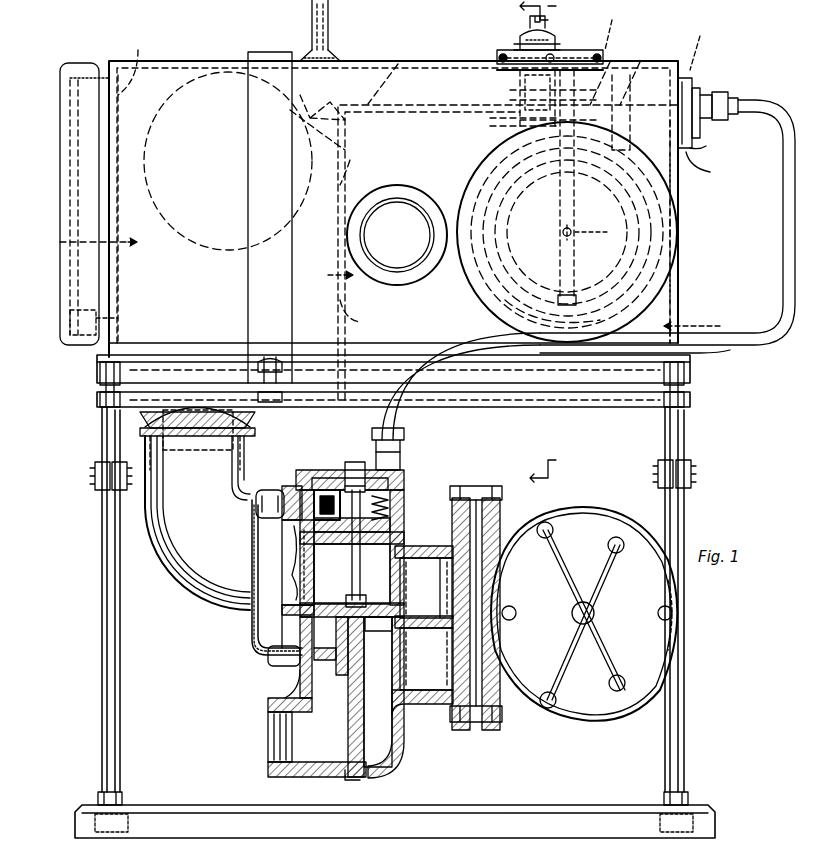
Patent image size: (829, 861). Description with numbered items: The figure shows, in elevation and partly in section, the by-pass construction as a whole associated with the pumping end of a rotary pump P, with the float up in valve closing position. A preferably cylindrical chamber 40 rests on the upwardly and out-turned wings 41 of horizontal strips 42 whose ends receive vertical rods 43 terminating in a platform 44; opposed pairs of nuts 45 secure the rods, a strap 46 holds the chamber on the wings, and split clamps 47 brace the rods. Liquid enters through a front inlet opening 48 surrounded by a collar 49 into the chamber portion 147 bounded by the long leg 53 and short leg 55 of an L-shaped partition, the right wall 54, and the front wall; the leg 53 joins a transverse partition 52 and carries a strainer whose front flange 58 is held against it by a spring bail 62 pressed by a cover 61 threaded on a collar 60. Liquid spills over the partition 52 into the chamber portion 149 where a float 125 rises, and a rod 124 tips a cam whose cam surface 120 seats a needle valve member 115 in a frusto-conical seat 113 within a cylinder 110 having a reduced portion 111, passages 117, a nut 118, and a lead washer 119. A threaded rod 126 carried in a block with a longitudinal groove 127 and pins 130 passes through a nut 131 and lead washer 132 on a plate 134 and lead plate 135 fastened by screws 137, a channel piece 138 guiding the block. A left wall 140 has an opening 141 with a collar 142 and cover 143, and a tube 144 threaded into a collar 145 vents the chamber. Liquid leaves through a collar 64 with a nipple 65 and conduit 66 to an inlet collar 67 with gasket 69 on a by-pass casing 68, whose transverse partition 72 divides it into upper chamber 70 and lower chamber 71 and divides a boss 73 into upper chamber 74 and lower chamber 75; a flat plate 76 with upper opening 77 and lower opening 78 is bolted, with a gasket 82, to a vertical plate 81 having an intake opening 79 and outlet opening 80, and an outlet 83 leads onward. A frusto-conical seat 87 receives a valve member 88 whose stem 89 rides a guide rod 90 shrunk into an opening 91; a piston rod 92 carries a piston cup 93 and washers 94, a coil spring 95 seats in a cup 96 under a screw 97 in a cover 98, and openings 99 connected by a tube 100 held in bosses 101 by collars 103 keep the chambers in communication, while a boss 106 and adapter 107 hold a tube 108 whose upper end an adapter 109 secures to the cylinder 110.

The chamber 40 is at (178, 70).
The wings 41 is at (152, 358).
The horizontal strips 42 is at (100, 392).
The vertical rods 43 is at (102, 660).
The platform 44 is at (382, 835).
The nuts 45 is at (100, 372).
The strap 46 is at (258, 52).
The split clamp 47 is at (100, 480).
The front inlet opening 48 is at (400, 248).
The collar 49 is at (428, 260).
The transverse partition 52 is at (350, 140).
The long leg 53 is at (366, 66).
The right wall 54 is at (680, 304).
The short leg 55 is at (352, 168).
The front flange 58 is at (680, 238).
The collar 60 is at (660, 274).
The cover 61 is at (664, 212).
The spring bail 62 is at (576, 232).
The collar 64 is at (244, 436).
The nipple 65 is at (150, 432).
The conduit 66 is at (178, 536).
The inlet collar 67 is at (298, 592).
The by-pass casing 68 is at (300, 678).
The gasket 69 is at (322, 644).
The upper chamber 70 is at (352, 574).
The lower chamber 71 is at (378, 692).
The transverse partition 72 is at (402, 624).
The boss 73 is at (414, 546).
The upper chamber 74 is at (426, 588).
The lower chamber 75 is at (426, 659).
The flat plate 76 is at (458, 498).
The upper opening 77 is at (448, 556).
The lower opening 78 is at (446, 692).
The intake opening 79 is at (520, 540).
The outlet opening 80 is at (528, 708).
The vertical plate 81 is at (492, 498).
The gasket 82 is at (476, 486).
The outlet 83 is at (270, 744).
The frusto-conical seat 87 is at (378, 618).
The valve member 88 is at (366, 612).
The stem 89 is at (340, 672).
The guide rod 90 is at (350, 718).
The opening 91 is at (374, 786).
The piston rod 92 is at (352, 572).
The piston cup 93 is at (402, 520).
The washers 94 is at (336, 532).
The coil spring 95 is at (368, 494).
The cup 96 is at (328, 470).
The screw 97 is at (354, 462).
The cover 98 is at (302, 470).
The openings 99 is at (327, 570).
The tube 100 is at (250, 600).
The bosses 101 is at (296, 486).
The collar 103 is at (262, 490).
The boss 106 is at (404, 458).
The adapter 107 is at (398, 440).
The tube 108 is at (782, 184).
The adapter 109 is at (720, 92).
The cylinder 110 is at (682, 76).
The reduced portion 111 is at (704, 92).
The frusto-conical seat 113 is at (700, 82).
The needle valve member 115 is at (636, 146).
The passages 117 is at (700, 44).
The nut 118 is at (698, 144).
The lead washer 119 is at (712, 168).
The cam surface 120 is at (598, 160).
The rod 124 is at (452, 115).
The float 125 is at (212, 245).
The threaded rod 126 is at (528, 18).
The longitudinal groove 127 is at (622, 25).
The pins 130 is at (524, 90).
The nut 131 is at (521, 36).
The lead washer 132 is at (514, 46).
The plate 134 is at (560, 48).
The lead plate 135 is at (510, 72).
The screws 137 is at (500, 60).
The channel piece 138 is at (520, 128).
The left wall 140 is at (134, 62).
The opening 141 is at (118, 262).
The collar 142 is at (70, 312).
The cover 143 is at (62, 210).
The tube 144 is at (330, 24).
The collar 145 is at (304, 56).
The chamber portion 147 is at (524, 301).
The chamber portion 149 is at (62, 242).
The pump P is at (638, 695).